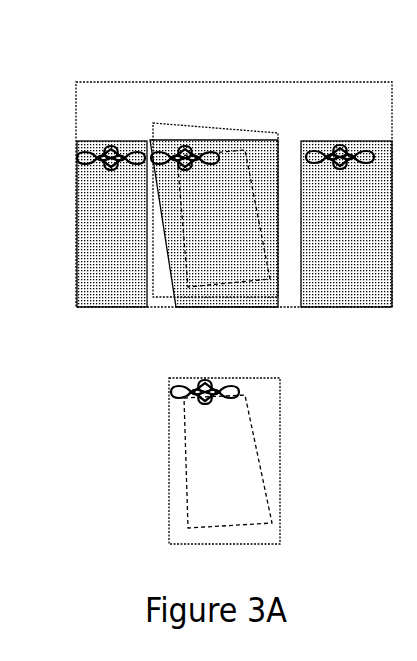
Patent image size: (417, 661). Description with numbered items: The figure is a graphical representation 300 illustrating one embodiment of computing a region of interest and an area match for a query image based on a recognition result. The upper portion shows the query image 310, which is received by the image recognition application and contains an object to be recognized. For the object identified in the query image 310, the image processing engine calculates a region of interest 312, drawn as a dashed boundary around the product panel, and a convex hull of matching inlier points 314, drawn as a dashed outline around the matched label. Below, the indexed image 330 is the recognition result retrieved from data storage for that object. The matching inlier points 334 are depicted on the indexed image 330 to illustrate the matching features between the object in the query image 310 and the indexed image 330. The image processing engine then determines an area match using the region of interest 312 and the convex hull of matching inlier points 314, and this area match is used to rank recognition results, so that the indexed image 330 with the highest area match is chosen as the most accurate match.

The user interface display 300 is at (60, 51).
The query image 310 is at (290, 82).
The region of interest 312 is at (243, 130).
The convex hull of matching inlier points 314 is at (202, 289).
The indexed image 330 is at (247, 378).
The matching inlier points 334 is at (221, 528).